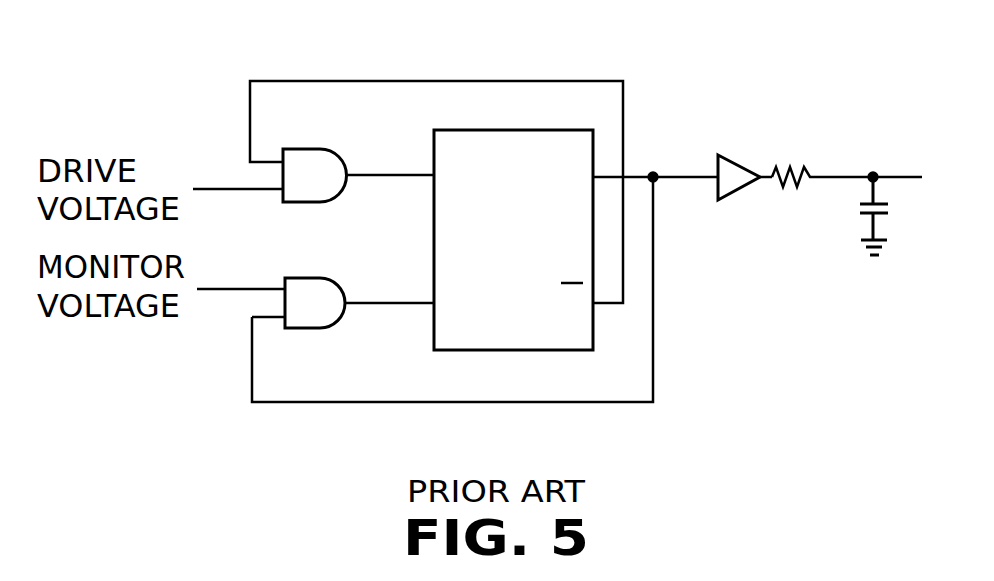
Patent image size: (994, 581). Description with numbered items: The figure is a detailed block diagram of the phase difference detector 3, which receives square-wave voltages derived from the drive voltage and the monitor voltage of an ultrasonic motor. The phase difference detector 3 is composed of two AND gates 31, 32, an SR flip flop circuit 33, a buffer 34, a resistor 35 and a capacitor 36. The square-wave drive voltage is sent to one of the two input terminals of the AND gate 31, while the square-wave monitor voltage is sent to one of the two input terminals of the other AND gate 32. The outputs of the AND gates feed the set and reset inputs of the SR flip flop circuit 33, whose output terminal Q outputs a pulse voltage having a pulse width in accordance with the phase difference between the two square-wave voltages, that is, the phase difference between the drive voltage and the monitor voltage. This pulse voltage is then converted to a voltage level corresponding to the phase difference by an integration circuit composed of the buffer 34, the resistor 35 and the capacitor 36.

The phase difference detector 3 is at (377, 81).
The AND gate 31 is at (322, 150).
The AND gate 32 is at (336, 326).
The SR flip flop circuit 33 is at (500, 130).
The buffer 34 is at (737, 160).
The resistor 35 is at (797, 168).
The capacitor 36 is at (855, 208).